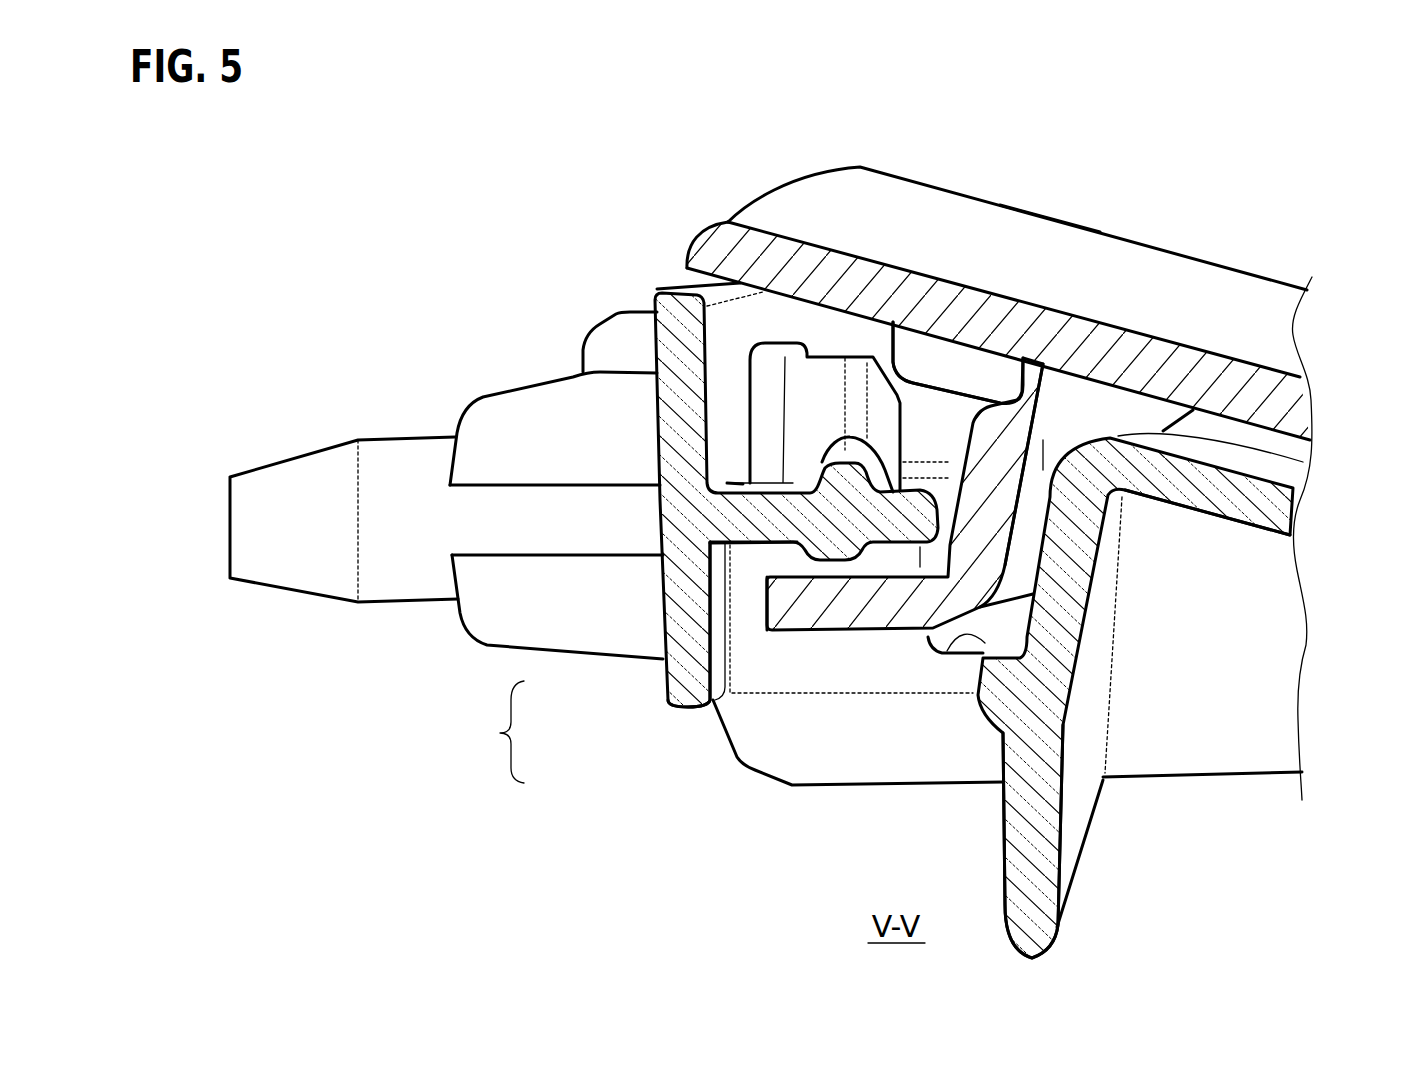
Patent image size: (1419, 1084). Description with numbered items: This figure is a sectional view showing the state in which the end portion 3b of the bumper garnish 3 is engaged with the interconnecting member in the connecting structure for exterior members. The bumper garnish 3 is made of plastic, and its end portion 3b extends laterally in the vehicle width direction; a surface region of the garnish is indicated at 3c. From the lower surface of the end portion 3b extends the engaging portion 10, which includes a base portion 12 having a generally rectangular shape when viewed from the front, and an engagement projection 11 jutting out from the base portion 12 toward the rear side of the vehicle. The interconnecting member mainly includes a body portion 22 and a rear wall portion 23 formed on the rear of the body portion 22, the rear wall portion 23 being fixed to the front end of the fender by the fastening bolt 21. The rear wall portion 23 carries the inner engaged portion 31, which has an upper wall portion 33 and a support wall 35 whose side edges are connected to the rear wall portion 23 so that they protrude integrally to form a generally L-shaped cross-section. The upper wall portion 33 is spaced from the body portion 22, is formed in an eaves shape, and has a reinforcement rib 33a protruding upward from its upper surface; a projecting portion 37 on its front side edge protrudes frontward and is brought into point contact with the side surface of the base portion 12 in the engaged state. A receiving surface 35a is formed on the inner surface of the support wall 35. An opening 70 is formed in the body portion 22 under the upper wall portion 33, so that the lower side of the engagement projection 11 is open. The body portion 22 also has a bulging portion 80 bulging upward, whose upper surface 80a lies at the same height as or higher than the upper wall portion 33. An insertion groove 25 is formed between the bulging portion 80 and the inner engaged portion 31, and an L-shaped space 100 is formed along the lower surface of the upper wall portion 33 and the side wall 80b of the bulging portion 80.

The bumper garnish 3 is at (1205, 251).
The end portion of the bumper garnish 3b is at (733, 212).
The surface of panel 3c is at (1067, 253).
The engaging portion 10 is at (903, 130).
The engagement projection 11 is at (863, 595).
The base portion 12 is at (967, 445).
The fastening bolt 21 is at (393, 457).
The body portion 22 is at (1073, 828).
The rear wall portion 23 is at (727, 334).
The insertion groove 25 is at (955, 626).
The inner engaged portion 31 is at (500, 733).
The upper wall portion 33 is at (807, 470).
The reinforcement rib 33a is at (850, 455).
The support wall 35 is at (770, 562).
The receiving surface 35a is at (748, 612).
The projecting portion 37 is at (945, 608).
The opening 70 is at (980, 668).
The bulging portion 80 is at (1265, 470).
The upper surface of the bulging portion 80a is at (1200, 392).
The side wall of the bulging portion 80b is at (1097, 520).
The L-shaped space 100 is at (1043, 486).